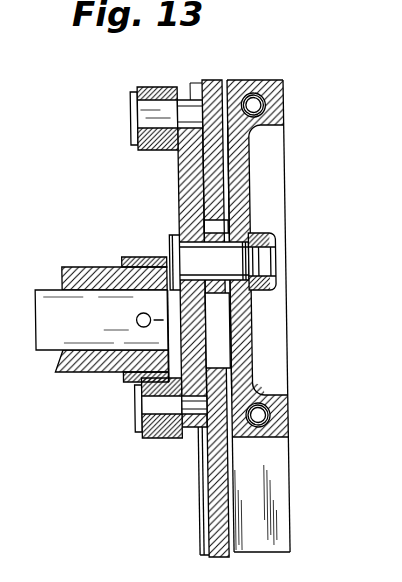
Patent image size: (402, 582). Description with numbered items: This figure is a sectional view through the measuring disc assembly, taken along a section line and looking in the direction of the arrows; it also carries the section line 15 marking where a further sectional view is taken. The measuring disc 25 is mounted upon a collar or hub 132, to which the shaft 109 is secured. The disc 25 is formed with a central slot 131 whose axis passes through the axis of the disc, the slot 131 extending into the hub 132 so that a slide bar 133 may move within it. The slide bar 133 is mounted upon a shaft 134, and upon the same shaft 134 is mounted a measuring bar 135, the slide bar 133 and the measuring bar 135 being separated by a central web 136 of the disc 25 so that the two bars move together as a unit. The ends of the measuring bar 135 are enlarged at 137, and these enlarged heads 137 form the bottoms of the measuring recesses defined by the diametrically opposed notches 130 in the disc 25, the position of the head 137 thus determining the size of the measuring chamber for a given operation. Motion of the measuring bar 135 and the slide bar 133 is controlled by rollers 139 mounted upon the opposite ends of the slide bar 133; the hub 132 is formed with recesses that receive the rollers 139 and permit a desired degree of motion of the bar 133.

The measuring disc 25 is at (268, 218).
The shaft 109 is at (57, 305).
The recess 130 is at (269, 470).
The central slot 131 is at (213, 340).
The collar or hub 132 is at (60, 377).
The slide bar 133 is at (175, 193).
The shaft 134 is at (272, 265).
The measuring bar 135 is at (238, 185).
The central web 136 is at (215, 80).
The enlarged head 137 is at (280, 80).
The roller 139 is at (157, 440).
The section line 15 is at (125, 418).